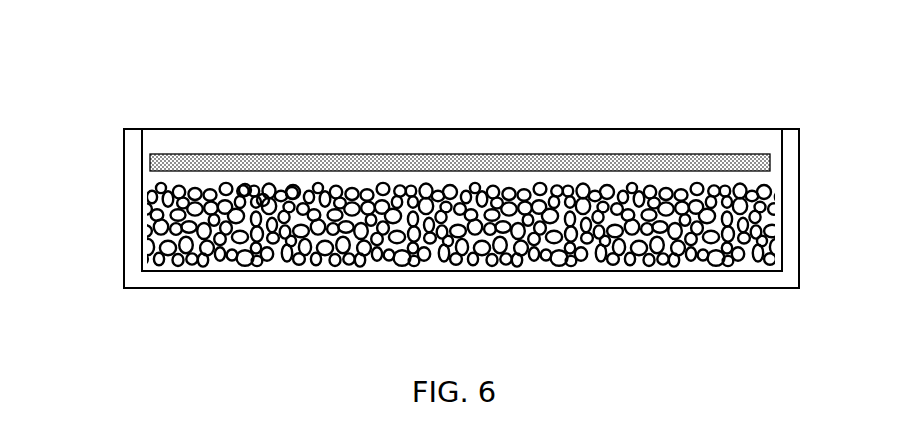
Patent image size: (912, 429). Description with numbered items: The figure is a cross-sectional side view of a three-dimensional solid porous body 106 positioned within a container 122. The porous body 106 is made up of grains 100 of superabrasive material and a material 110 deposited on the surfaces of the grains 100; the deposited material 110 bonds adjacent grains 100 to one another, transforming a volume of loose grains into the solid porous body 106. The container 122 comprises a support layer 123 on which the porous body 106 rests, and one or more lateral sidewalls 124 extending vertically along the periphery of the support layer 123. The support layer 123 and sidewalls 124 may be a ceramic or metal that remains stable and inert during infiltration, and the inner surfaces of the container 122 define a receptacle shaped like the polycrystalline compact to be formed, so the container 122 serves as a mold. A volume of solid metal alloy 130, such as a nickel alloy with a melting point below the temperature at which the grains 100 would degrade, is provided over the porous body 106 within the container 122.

The container 122 is at (113, 122).
The lateral sidewalls 124 is at (133, 216).
The support layer 123 is at (283, 279).
The solid metal alloy 130 is at (545, 166).
The three-dimensional solid porous body 106 is at (660, 181).
The grains of superabrasive material 100 is at (263, 194).
The material deposited on the grains 110 is at (292, 187).